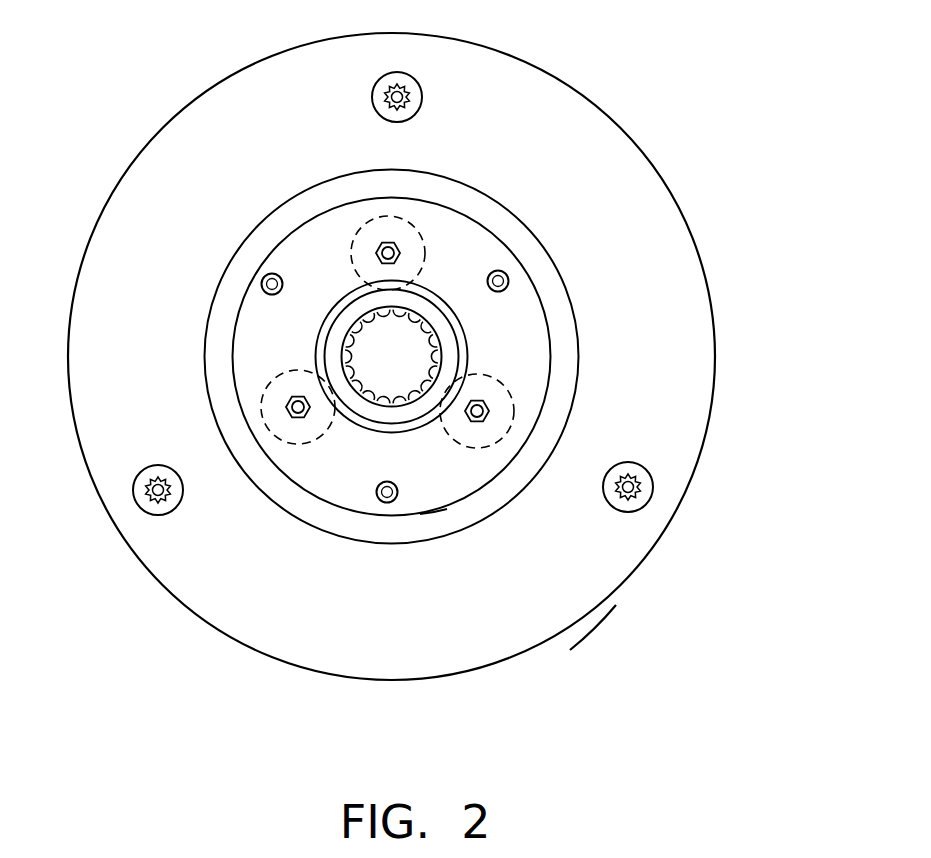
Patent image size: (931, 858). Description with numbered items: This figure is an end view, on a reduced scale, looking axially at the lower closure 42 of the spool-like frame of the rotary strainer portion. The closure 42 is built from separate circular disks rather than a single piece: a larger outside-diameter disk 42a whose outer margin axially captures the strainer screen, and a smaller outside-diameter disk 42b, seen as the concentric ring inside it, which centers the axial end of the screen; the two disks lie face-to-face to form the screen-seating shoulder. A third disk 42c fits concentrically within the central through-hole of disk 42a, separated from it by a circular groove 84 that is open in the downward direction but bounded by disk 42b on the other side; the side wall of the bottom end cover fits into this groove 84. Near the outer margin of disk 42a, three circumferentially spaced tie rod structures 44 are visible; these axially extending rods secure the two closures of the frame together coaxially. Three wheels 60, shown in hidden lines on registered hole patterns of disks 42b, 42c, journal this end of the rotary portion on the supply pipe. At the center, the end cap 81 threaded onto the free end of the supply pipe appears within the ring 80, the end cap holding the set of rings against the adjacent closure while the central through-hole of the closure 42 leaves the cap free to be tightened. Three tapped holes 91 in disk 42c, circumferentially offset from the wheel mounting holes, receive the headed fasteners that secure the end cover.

The closure 42 is at (713, 353).
The circular disk 42a is at (582, 597).
The circular disk 42b is at (362, 527).
The third disk 42c is at (513, 318).
The tie rod structures 44 is at (422, 78).
The wheels 60 is at (410, 223).
The circular ring 80 is at (338, 346).
The end cap 81 is at (405, 340).
The circular groove 84 is at (460, 516).
The tapped holes 91 is at (262, 279).